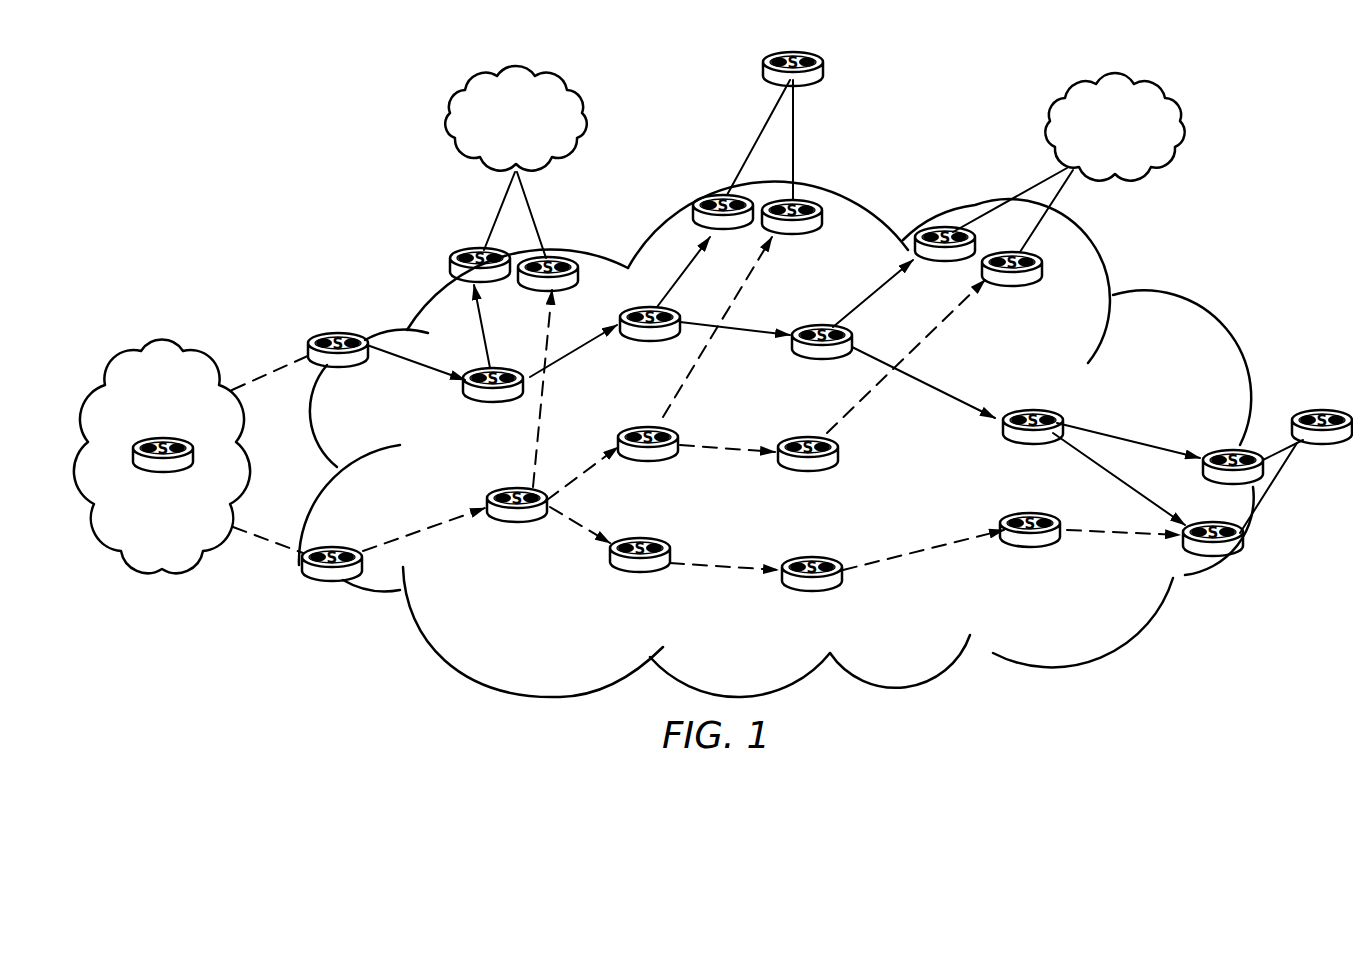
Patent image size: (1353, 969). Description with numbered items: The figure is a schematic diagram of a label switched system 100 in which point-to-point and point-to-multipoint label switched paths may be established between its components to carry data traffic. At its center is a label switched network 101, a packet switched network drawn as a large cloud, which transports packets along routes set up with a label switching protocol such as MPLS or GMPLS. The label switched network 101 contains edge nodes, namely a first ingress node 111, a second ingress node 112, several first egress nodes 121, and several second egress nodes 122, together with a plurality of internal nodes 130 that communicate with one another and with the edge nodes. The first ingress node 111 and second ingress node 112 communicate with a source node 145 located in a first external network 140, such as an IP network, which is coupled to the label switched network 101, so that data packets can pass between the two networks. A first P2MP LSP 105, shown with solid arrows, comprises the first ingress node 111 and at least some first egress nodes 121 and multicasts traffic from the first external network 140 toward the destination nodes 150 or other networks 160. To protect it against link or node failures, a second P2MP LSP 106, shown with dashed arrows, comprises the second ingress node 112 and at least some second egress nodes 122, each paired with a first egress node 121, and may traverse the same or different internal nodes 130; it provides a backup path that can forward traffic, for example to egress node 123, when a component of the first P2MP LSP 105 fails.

The label switched system 100 is at (262, 150).
The label switched network 101 is at (1182, 300).
The first P2MP LSP 105 is at (482, 332).
The second P2MP LSP 106 is at (537, 443).
The first ingress node 111 is at (340, 362).
The second ingress node 112 is at (334, 545).
The first egress nodes 121 is at (466, 254).
The second egress nodes 122 is at (562, 258).
The egress node 123 is at (1195, 542).
The internal nodes 130 is at (648, 336).
The first external network 140 is at (218, 352).
The source node 145 is at (157, 467).
The destination nodes 150 is at (818, 76).
The other networks 160 is at (534, 134).